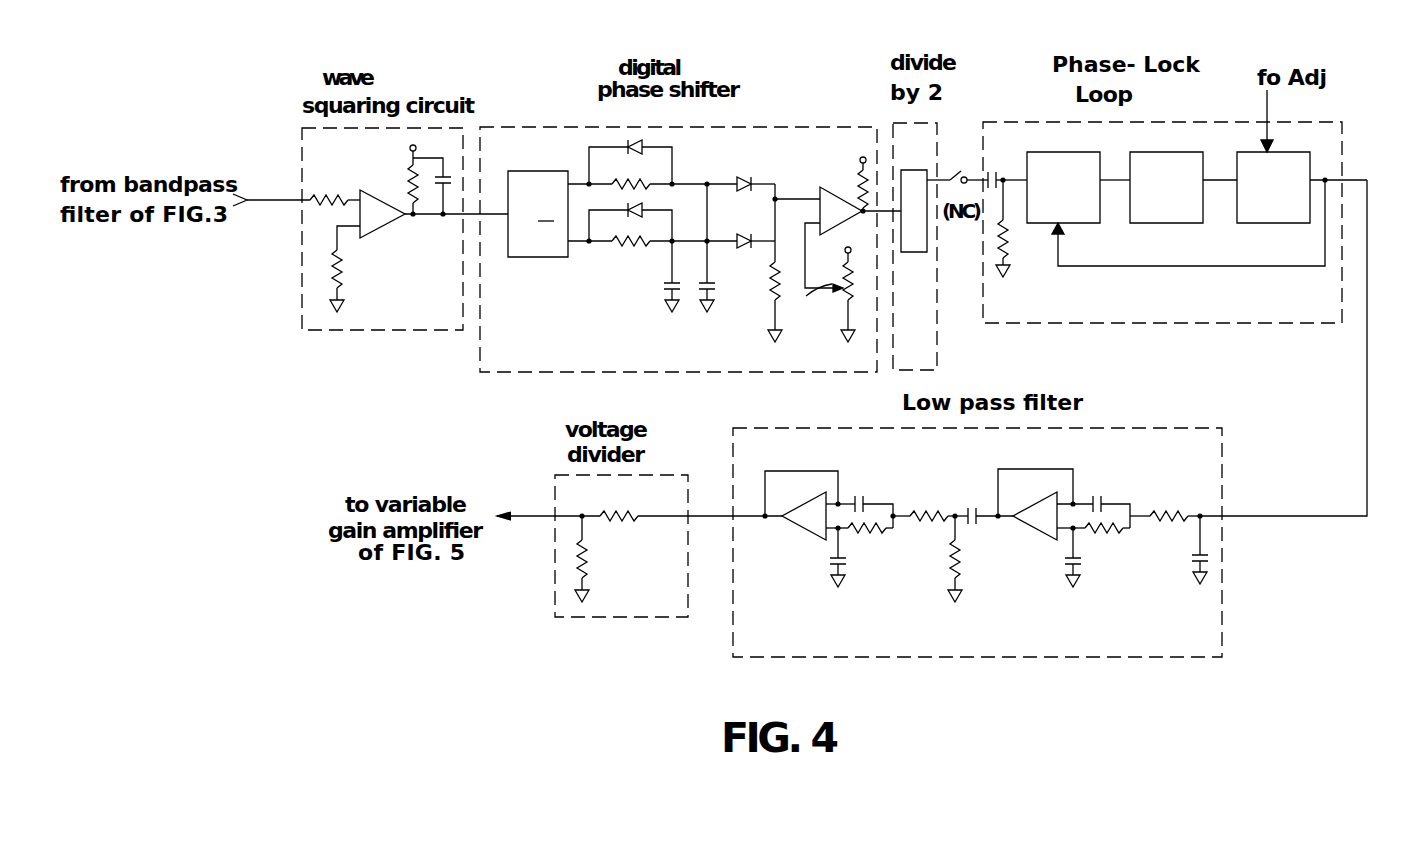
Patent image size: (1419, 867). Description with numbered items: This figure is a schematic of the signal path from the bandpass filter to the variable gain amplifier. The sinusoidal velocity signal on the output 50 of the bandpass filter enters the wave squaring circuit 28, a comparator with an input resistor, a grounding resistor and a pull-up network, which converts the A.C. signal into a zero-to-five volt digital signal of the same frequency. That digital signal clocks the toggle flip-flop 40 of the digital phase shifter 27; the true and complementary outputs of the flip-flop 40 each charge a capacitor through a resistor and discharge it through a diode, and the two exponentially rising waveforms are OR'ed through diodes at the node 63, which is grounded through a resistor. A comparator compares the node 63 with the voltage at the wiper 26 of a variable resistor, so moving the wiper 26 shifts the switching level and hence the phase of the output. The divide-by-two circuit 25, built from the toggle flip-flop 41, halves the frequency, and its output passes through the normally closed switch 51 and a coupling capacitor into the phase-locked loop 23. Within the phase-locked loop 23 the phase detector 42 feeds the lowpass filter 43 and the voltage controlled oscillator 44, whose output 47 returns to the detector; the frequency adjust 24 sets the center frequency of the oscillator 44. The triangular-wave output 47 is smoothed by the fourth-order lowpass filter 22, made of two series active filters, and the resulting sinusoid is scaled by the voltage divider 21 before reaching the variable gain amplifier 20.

The output of filter 50 is at (258, 198).
The wave squaring circuit 28 is at (405, 250).
The toggle flip-flop 40 is at (536, 171).
The digital phase shifter 27 is at (690, 251).
The node 63 is at (777, 196).
The wiper of variable resistor 26 is at (838, 283).
The divide-by-two circuit 25 is at (912, 267).
The toggle flip-flop 41 is at (912, 252).
The normally closed switch 51 is at (954, 172).
The phase-locked loop 23 is at (1200, 303).
The phase detector 42 is at (1059, 152).
The lowpass filter 43 is at (1148, 152).
The frequency adjust 24 is at (1258, 140).
The voltage controlled oscillator 44 is at (1282, 152).
The output of VCO 47 is at (1185, 350).
The lowpass filter 22 is at (977, 569).
The voltage divider 21 is at (644, 568).
The variable gain amplifier 20 is at (507, 531).